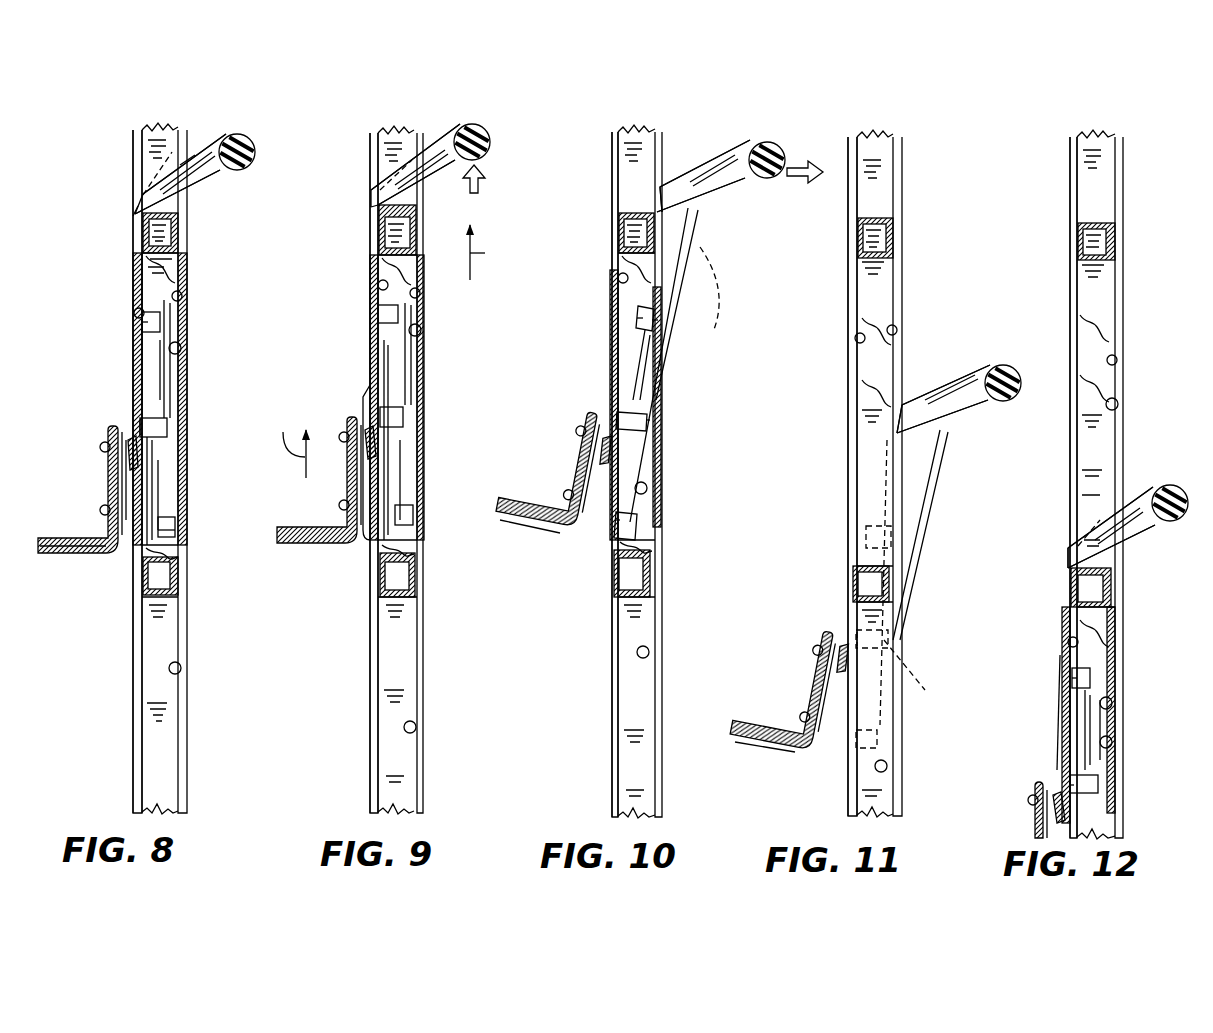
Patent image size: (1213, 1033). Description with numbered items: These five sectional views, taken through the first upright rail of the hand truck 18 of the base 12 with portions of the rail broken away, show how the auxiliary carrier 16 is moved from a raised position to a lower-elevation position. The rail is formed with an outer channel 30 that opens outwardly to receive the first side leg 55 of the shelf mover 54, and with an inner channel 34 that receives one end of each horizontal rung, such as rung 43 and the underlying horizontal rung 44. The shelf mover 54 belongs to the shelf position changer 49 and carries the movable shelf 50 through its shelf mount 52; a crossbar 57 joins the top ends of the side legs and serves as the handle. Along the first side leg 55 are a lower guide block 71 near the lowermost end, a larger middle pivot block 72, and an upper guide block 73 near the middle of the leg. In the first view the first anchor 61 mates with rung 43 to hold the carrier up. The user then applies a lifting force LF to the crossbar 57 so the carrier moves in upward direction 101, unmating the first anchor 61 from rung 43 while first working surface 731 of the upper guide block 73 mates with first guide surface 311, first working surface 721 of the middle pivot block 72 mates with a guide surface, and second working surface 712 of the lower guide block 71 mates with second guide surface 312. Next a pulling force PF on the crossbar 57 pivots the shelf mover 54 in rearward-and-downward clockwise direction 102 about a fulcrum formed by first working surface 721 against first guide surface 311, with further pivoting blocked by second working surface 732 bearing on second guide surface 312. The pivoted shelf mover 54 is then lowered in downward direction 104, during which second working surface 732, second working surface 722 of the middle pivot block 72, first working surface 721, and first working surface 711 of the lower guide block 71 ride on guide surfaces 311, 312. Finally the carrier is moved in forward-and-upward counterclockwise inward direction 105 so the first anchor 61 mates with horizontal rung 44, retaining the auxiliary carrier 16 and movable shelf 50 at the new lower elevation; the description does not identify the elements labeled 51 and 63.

In FIG. 8, the base 12 is at (98, 736).
In FIG. 9, the base 12 is at (368, 715).
In FIG. 10, the base 12 is at (603, 207).
In FIG. 11, the base 12 is at (905, 237).
In FIG. 12, the base 12 is at (1128, 204).
In FIG. 8, the auxiliary carrier 16 is at (262, 142).
In FIG. 9, the auxiliary carrier 16 is at (495, 125).
In FIG. 10, the auxiliary carrier 16 is at (568, 440).
In FIG. 11, the auxiliary carrier 16 is at (925, 494).
In FIG. 12, the auxiliary carrier 16 is at (1162, 477).
In FIG. 8, the hand truck 18 is at (128, 634).
In FIG. 9, the hand truck 18 is at (368, 627).
In FIG. 10, the hand truck 18 is at (603, 624).
In FIG. 11, the hand truck 18 is at (845, 320).
In FIG. 12, the hand truck 18 is at (1067, 337).
In FIG. 8, the outer channel 30 is at (183, 360).
In FIG. 9, the outer channel 30 is at (421, 338).
In FIG. 10, the outer channel 30 is at (619, 396).
In FIG. 12, the outer channel 30 is at (1112, 712).
In FIG. 8, the inner channel 34 is at (181, 676).
In FIG. 9, the inner channel 34 is at (416, 737).
In FIG. 10, the inner channel 34 is at (650, 652).
In FIG. 11, the inner channel 34 is at (887, 766).
In FIG. 12, the inner channel 34 is at (1118, 406).
In FIG. 8, the rung 43 is at (182, 233).
In FIG. 9, the rung 43 is at (420, 236).
In FIG. 10, the rung 43 is at (614, 236).
In FIG. 11, the rung 43 is at (848, 237).
In FIG. 12, the rung 43 is at (1073, 242).
In FIG. 8, the horizontal rung 44 is at (160, 604).
In FIG. 9, the horizontal rung 44 is at (377, 573).
In FIG. 10, the horizontal rung 44 is at (593, 577).
In FIG. 11, the horizontal rung 44 is at (847, 584).
In FIG. 12, the horizontal rung 44 is at (1070, 590).
In FIG. 8, the shelf position changer 49 is at (226, 123).
In FIG. 9, the shelf position changer 49 is at (438, 125).
In FIG. 10, the shelf position changer 49 is at (757, 133).
In FIG. 11, the shelf position changer 49 is at (960, 360).
In FIG. 12, the shelf position changer 49 is at (1162, 488).
In FIG. 8, the movable shelf 50 is at (58, 530).
In FIG. 9, the movable shelf 50 is at (297, 526).
In FIG. 10, the movable shelf 50 is at (540, 490).
In FIG. 11, the movable shelf 50 is at (782, 712).
In FIG. 12, the movable shelf 50 is at (1023, 823).
In FIG. 8, the clip foot 51 is at (88, 537).
In FIG. 10, the clip foot 51 is at (738, 726).
In FIG. 11, the clip foot 51 is at (738, 726).
In FIG. 8, the shelf mount 52 is at (108, 477).
In FIG. 9, the shelf mount 52 is at (370, 442).
In FIG. 11, the shelf mount 52 is at (815, 651).
In FIG. 8, the shelf mover 54 is at (130, 207).
In FIG. 9, the shelf mover 54 is at (369, 207).
In FIG. 10, the shelf mover 54 is at (675, 165).
In FIG. 11, the shelf mover 54 is at (910, 387).
In FIG. 12, the shelf mover 54 is at (1128, 492).
In FIG. 8, the first side leg 55 is at (150, 382).
In FIG. 9, the first side leg 55 is at (395, 383).
In FIG. 10, the first side leg 55 is at (640, 365).
In FIG. 12, the first side leg 55 is at (1078, 728).
In FIG. 8, the crossbar 57 is at (253, 164).
In FIG. 9, the crossbar 57 is at (480, 152).
In FIG. 10, the crossbar 57 is at (788, 140).
In FIG. 11, the crossbar 57 is at (1003, 366).
In FIG. 12, the crossbar 57 is at (1166, 524).
In FIG. 8, the first anchor 61 is at (158, 187).
In FIG. 9, the first anchor 61 is at (383, 197).
In FIG. 10, the first anchor 61 is at (690, 188).
In FIG. 11, the first anchor 61 is at (912, 415).
In FIG. 12, the first anchor 61 is at (1070, 557).
In FIG. 8, the handle edge 63 is at (191, 148).
In FIG. 8, the lower guide block 71 is at (165, 518).
In FIG. 9, the lower guide block 71 is at (407, 513).
In FIG. 10, the lower guide block 71 is at (640, 522).
In FIG. 11, the lower guide block 71 is at (895, 742).
In FIG. 8, the middle pivot block 72 is at (165, 427).
In FIG. 9, the middle pivot block 72 is at (395, 417).
In FIG. 10, the middle pivot block 72 is at (645, 420).
In FIG. 11, the middle pivot block 72 is at (881, 623).
In FIG. 12, the middle pivot block 72 is at (1100, 783).
In FIG. 8, the upper guide block 73 is at (153, 307).
In FIG. 9, the upper guide block 73 is at (385, 310).
In FIG. 10, the upper guide block 73 is at (652, 320).
In FIG. 11, the upper guide block 73 is at (866, 537).
In FIG. 12, the upper guide block 73 is at (1093, 680).
In FIG. 9, the upward direction 101 is at (400, 351).
In FIG. 10, the pivoting direction 102 is at (677, 107).
In FIG. 11, the downward direction 104 is at (827, 420).
In FIG. 12, the counterclockwise inward direction 105 is at (1095, 447).
In FIG. 8, the first guide surface 311 is at (137, 343).
In FIG. 9, the first guide surface 311 is at (380, 280).
In FIG. 10, the first guide surface 311 is at (630, 277).
In FIG. 11, the first guide surface 311 is at (857, 338).
In FIG. 12, the first guide surface 311 is at (1078, 350).
In FIG. 8, the second guide surface 312 is at (184, 298).
In FIG. 9, the second guide surface 312 is at (420, 295).
In FIG. 10, the second guide surface 312 is at (648, 507).
In FIG. 11, the second guide surface 312 is at (897, 330).
In FIG. 12, the second guide surface 312 is at (1118, 360).
In FIG. 10, the first working surface 711 is at (612, 513).
In FIG. 12, the first working surface 711 is at (1070, 782).
In FIG. 8, the second working surface 712 is at (173, 523).
In FIG. 8, the first working surface 721 is at (138, 423).
In FIG. 10, the first working surface 721 is at (615, 412).
In FIG. 11, the first working surface 721 is at (845, 634).
In FIG. 12, the first working surface 721 is at (1075, 672).
In FIG. 10, the second working surface 722 is at (648, 430).
In FIG. 11, the second working surface 722 is at (881, 644).
In FIG. 8, the first working surface 731 is at (142, 323).
In FIG. 10, the first working surface 731 is at (640, 320).
In FIG. 10, the second working surface 732 is at (655, 327).
In FIG. 11, the second working surface 732 is at (891, 544).
In FIG. 9, the lifting force LF is at (480, 197).
In FIG. 10, the pulling force PF is at (797, 178).